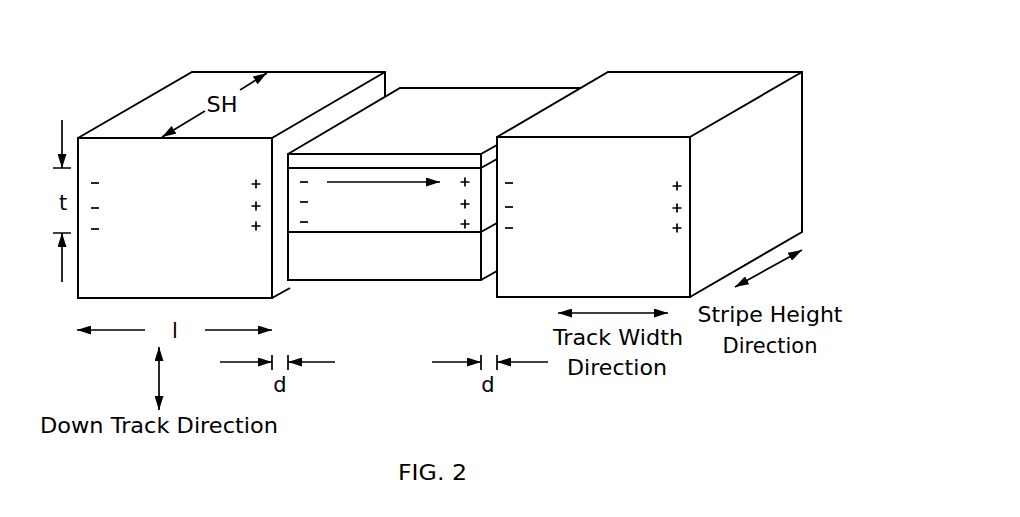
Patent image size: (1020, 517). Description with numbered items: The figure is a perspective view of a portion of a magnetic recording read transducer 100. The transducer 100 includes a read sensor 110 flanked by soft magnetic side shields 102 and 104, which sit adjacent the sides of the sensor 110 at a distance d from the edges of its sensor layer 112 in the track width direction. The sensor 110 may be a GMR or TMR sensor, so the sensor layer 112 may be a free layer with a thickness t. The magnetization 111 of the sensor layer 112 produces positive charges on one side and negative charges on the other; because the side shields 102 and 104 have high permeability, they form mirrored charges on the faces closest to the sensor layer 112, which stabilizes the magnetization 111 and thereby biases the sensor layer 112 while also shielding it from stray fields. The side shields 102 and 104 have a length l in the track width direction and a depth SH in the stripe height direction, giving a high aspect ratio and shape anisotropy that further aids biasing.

The read transducer 100 is at (412, 35).
The soft magnetic side shield 102 is at (722, 72).
The soft magnetic side shield 104 is at (137, 103).
The read sensor 110 is at (434, 193).
The magnetization 111 is at (385, 182).
The sensor layer 112 is at (320, 283).